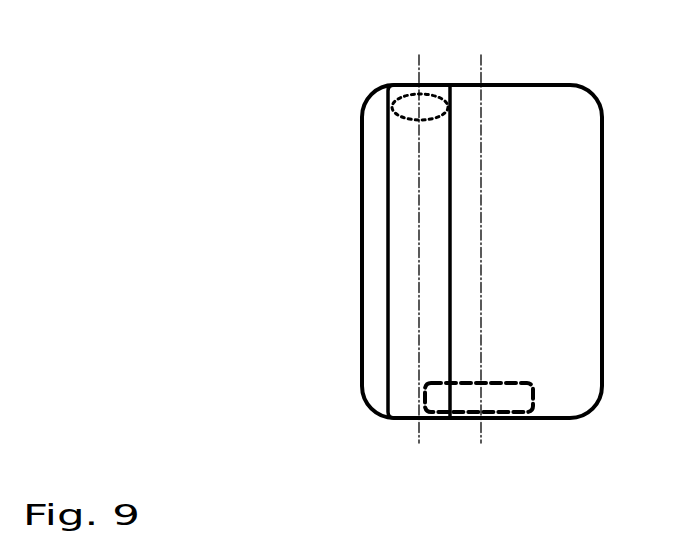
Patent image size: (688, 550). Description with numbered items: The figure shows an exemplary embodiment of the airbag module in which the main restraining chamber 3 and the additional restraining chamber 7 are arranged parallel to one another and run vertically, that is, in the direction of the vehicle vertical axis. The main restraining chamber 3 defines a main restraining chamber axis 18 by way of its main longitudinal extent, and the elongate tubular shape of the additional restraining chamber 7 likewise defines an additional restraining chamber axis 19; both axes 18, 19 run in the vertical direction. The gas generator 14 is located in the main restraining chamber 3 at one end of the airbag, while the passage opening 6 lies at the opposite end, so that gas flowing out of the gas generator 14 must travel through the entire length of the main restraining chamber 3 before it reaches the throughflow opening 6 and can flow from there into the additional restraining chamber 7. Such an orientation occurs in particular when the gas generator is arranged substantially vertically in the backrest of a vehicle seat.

The main restraining chamber 3 is at (518, 251).
The passage opening 6 is at (368, 87).
The additional restraining chamber 7 is at (378, 251).
The gas generator 14 is at (522, 432).
The main restraining chamber axis 18 is at (439, 221).
The additional restraining chamber axis 19 is at (359, 249).